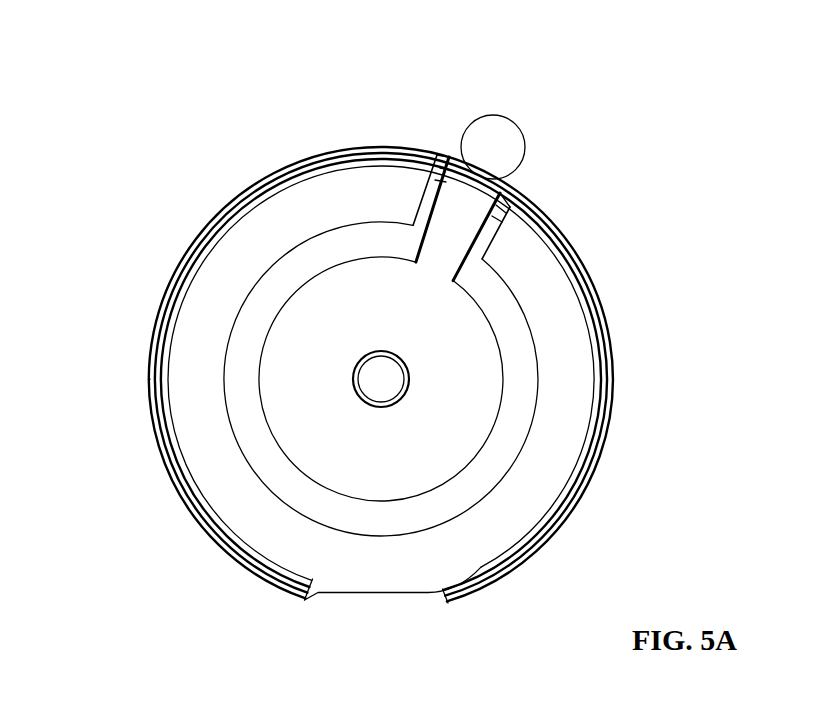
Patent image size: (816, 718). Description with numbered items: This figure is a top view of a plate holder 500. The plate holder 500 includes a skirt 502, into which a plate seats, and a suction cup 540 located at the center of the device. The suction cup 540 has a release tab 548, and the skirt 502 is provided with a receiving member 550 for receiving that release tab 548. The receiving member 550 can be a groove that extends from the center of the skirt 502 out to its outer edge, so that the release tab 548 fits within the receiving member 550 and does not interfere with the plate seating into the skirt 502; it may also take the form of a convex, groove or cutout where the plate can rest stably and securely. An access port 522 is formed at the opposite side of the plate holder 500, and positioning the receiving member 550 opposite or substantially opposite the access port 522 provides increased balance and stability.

The plate holder 500 is at (178, 187).
The skirt 502 is at (556, 443).
The access port 522 is at (355, 599).
The suction cup 540 is at (478, 365).
The release tab 548 is at (455, 225).
The receiving member 550 is at (453, 133).